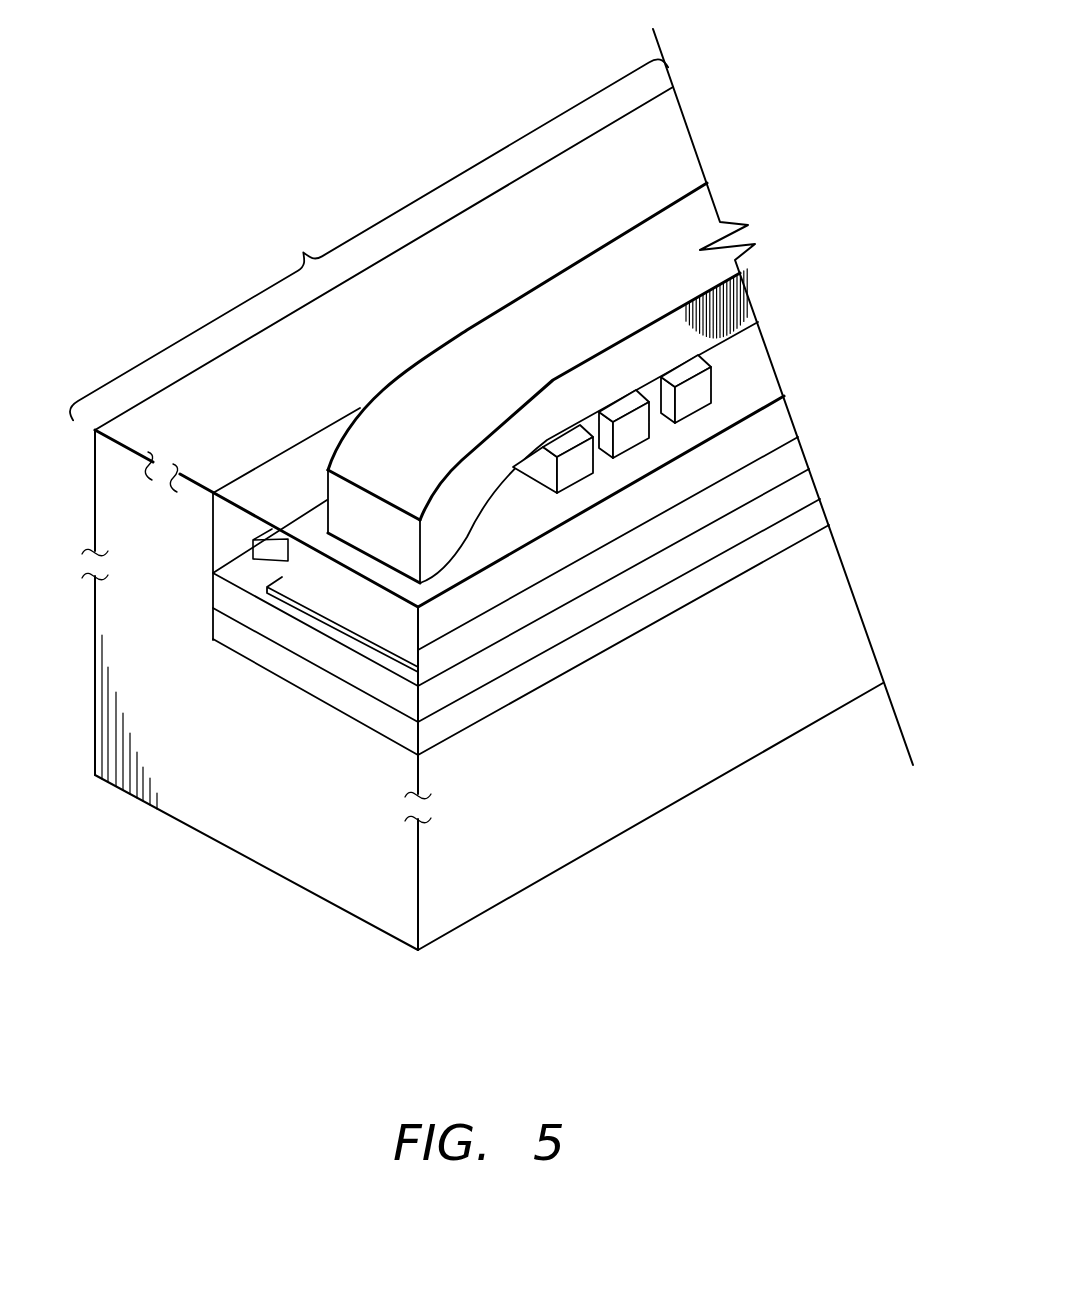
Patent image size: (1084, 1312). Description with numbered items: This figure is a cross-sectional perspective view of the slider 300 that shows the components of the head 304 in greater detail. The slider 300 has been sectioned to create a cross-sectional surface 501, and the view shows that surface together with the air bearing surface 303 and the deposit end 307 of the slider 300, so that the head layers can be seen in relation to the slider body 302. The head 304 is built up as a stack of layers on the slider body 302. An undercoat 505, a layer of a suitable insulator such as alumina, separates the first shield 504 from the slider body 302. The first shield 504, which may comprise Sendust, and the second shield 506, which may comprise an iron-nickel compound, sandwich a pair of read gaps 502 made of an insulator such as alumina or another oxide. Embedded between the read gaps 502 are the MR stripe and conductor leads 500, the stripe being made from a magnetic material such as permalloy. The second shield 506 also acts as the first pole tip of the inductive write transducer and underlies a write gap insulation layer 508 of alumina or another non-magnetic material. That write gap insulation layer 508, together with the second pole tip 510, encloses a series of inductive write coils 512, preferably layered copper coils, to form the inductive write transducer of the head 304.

The slider 300 is at (735, 147).
The slider body 302 is at (845, 545).
The air bearing surface 303 is at (423, 973).
The head 304 is at (365, 205).
The deposit end 307 is at (369, 239).
The MR stripe and conductor leads 500 is at (292, 613).
The cross-sectional surface 501 is at (427, 967).
The read gaps 502 is at (793, 452).
The first shield 504 is at (810, 478).
The undercoat 505 is at (823, 505).
The second shield 506 is at (778, 418).
The write gap insulation layer 508 is at (755, 392).
The second pole tip 510 is at (520, 312).
The inductive write coils 512 is at (545, 475).